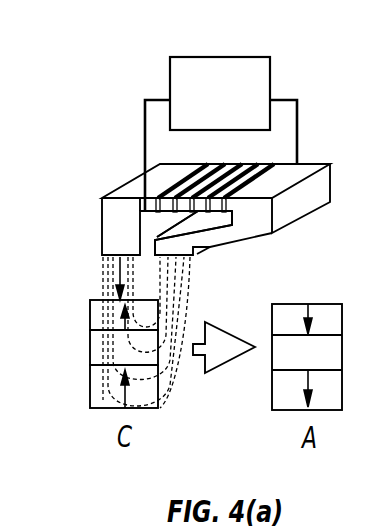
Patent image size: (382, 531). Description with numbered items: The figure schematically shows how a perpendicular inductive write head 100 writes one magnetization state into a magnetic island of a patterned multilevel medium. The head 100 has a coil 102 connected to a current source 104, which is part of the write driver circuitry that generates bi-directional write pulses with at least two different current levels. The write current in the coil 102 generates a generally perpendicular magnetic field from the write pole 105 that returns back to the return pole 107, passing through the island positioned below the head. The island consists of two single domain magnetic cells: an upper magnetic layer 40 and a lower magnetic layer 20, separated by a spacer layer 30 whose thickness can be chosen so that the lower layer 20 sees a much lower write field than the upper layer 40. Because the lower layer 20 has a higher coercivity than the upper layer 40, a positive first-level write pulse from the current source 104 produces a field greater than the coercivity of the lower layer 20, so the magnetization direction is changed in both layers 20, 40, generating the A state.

The inductive write head 100 is at (311, 166).
The coil 102 is at (191, 175).
The current source 104 is at (270, 57).
The write pole 105 is at (108, 228).
The return pole 107 is at (219, 239).
The upper magnetic layer 40 is at (88, 317).
The spacer layer 30 is at (88, 347).
The lower magnetic layer 20 is at (88, 384).